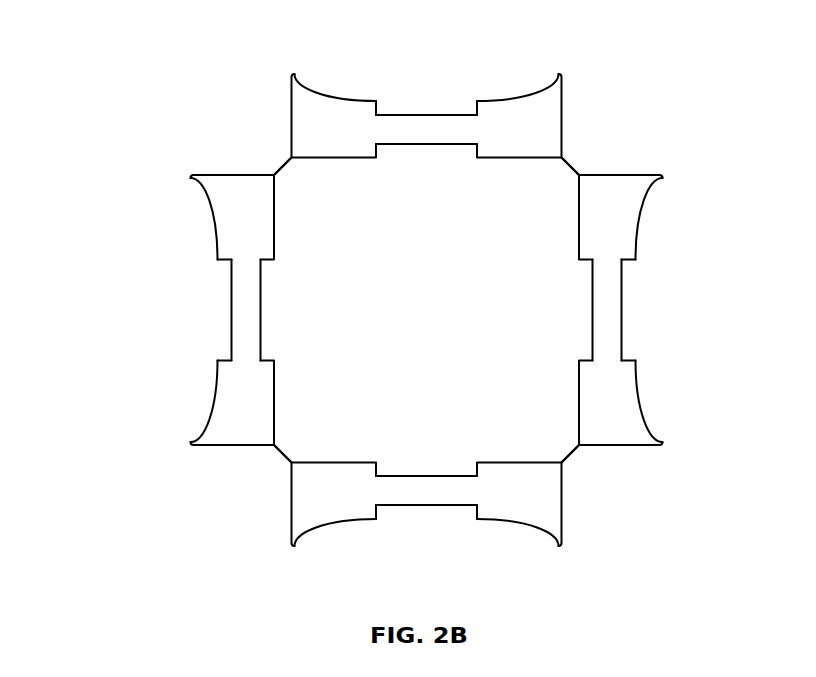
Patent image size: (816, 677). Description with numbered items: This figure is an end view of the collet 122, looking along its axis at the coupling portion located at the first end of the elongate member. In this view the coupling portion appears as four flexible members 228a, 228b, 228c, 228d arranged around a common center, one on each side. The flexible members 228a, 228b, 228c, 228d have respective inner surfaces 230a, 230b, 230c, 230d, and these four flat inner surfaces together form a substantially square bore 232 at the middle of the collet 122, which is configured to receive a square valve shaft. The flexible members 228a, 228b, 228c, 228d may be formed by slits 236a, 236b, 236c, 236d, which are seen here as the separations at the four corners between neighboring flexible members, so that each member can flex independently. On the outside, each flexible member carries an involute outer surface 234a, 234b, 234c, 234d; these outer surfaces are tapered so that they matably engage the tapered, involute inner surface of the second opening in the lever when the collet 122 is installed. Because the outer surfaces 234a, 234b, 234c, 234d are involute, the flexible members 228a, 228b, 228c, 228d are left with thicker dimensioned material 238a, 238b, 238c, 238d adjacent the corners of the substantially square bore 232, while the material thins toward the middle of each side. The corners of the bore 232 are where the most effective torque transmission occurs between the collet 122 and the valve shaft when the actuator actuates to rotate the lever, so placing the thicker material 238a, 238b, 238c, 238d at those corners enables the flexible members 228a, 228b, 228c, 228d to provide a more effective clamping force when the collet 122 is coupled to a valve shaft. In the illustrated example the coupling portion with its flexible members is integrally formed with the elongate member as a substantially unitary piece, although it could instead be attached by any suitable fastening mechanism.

The collet 122 is at (116, 35).
The flexible member 228a is at (230, 310).
The flexible member 228b is at (428, 114).
The flexible member 228c is at (623, 310).
The flexible member 228d is at (425, 507).
The inner surface 230a is at (275, 222).
The inner surface 230b is at (517, 159).
The inner surface 230c is at (578, 412).
The inner surface 230d is at (338, 461).
The substantially square bore 232 is at (426, 310).
The involute outer surface 234a is at (210, 222).
The involute outer surface 234b is at (337, 91).
The involute outer surface 234c is at (642, 220).
The involute outer surface 234d is at (329, 531).
The slit 236a is at (286, 165).
The slit 236b is at (567, 165).
The slit 236c is at (568, 455).
The slit 236d is at (282, 455).
The thicker dimensioned material 238a is at (218, 202).
The thicker dimensioned material 238b is at (305, 119).
The thicker dimensioned material 238c is at (607, 234).
The thicker dimensioned material 238d is at (302, 507).